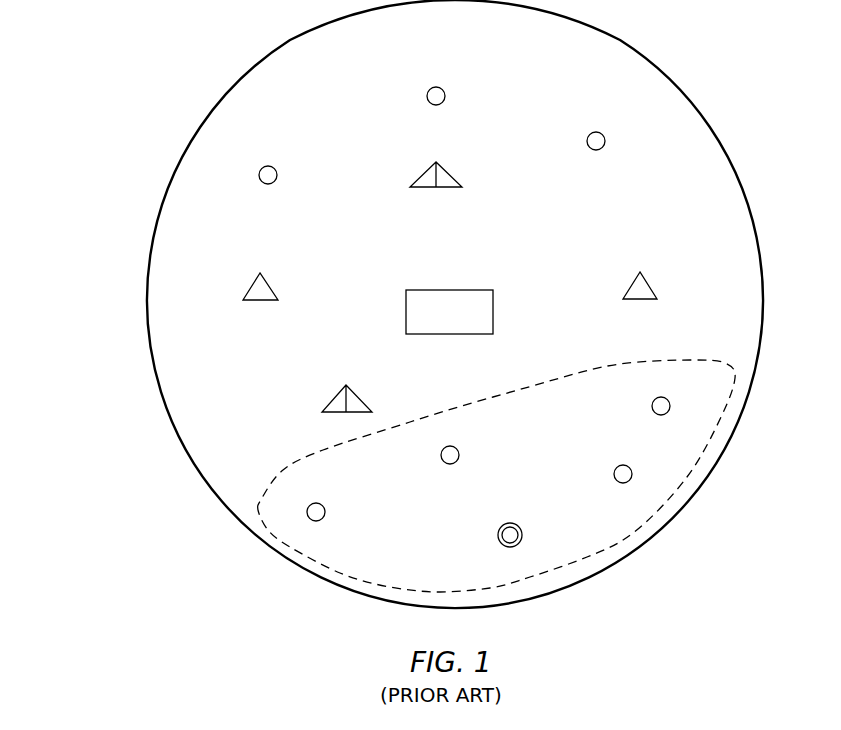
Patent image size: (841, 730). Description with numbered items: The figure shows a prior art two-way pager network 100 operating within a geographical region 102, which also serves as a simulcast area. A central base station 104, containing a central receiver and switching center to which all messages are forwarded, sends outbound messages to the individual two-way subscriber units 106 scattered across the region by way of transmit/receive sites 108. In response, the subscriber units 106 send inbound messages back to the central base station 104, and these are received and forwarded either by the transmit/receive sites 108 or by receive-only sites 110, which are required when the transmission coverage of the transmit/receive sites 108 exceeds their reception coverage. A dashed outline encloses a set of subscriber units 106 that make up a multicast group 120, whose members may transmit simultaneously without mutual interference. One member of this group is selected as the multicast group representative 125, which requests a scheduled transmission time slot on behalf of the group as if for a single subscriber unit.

The two-way pager network 100 is at (109, 73).
The geographical region 102 is at (148, 292).
The central base station 104 is at (406, 314).
The two-way subscriber unit (SU) 106 is at (445, 94).
The transmit/receive (TX/RX) site 108 is at (460, 186).
The receive-only (RX-only) site 110 is at (250, 289).
The multicast group 120 is at (630, 368).
The multicast group representative 125 is at (497, 540).